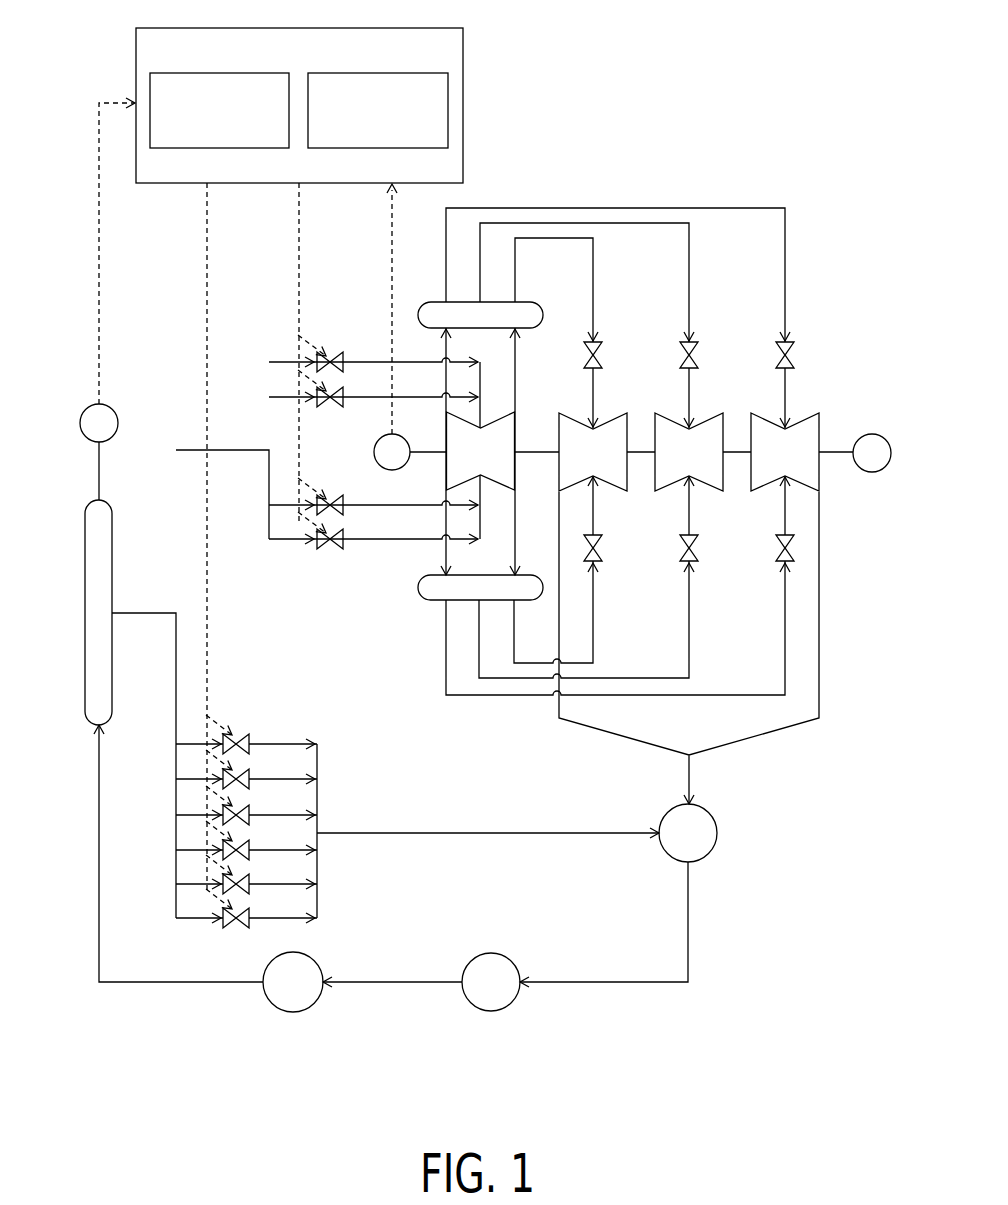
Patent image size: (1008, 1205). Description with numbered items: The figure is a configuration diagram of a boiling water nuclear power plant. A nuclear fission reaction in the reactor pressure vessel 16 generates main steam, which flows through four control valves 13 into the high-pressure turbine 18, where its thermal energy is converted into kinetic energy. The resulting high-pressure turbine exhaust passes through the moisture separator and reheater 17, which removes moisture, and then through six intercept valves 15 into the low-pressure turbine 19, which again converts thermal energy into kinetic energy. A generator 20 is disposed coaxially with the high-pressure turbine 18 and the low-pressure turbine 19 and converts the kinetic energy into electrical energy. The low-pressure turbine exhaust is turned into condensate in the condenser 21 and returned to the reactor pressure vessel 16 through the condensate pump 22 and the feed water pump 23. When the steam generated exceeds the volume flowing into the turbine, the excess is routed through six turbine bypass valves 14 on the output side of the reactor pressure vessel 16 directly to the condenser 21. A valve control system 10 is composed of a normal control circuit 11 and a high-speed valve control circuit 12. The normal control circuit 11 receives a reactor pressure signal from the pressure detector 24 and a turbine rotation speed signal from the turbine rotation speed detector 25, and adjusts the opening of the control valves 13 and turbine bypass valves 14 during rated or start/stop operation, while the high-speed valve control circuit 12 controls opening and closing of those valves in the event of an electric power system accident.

The valve control system 10 is at (405, 28).
The normal control circuit 11 is at (247, 73).
The high-speed valve control circuit 12 is at (405, 73).
The control valves 13 is at (343, 357).
The turbine bypass valves 14 is at (250, 738).
The intercept valves 15 is at (595, 341).
The reactor pressure vessel 16 is at (105, 503).
The moisture separator and reheater 17 is at (515, 302).
The high-pressure turbine 18 is at (516, 421).
The low-pressure turbine 19 is at (607, 412).
The generator 20 is at (872, 434).
The condenser 21 is at (706, 815).
The condensate pump 22 is at (512, 965).
The feed water pump 23 is at (314, 965).
The pressure detector 24 is at (113, 412).
The turbine rotation speed detector 25 is at (404, 440).